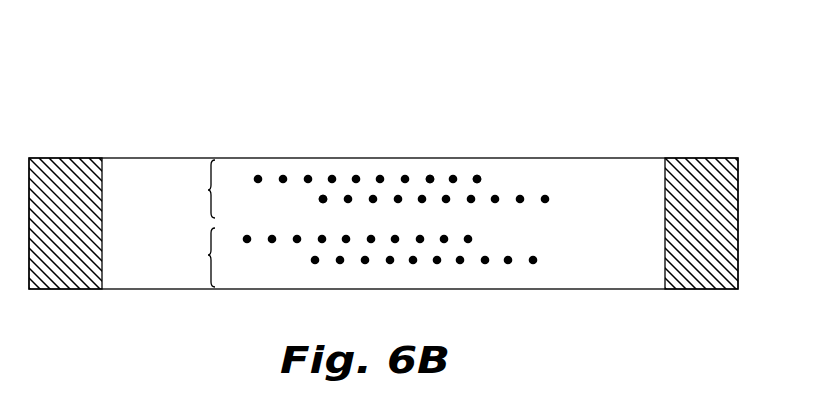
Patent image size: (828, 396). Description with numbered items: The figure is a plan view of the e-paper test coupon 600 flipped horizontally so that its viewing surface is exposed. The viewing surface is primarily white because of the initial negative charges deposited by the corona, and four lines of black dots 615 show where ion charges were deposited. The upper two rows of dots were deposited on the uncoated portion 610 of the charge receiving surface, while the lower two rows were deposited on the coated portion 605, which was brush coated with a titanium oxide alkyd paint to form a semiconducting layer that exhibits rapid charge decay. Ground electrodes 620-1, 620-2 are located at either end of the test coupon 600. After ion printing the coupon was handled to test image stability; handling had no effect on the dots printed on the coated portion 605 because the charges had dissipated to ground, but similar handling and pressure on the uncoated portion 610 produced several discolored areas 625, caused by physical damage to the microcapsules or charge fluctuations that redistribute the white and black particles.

The test coupon 600 is at (112, 68).
The coated portion 605 is at (208, 255).
The uncoated portion 610 is at (208, 190).
The black dots 615 is at (477, 172).
The ground electrode 620-1 is at (57, 168).
The ground electrode 620-2 is at (689, 168).
The discolored areas 625 is at (422, 183).